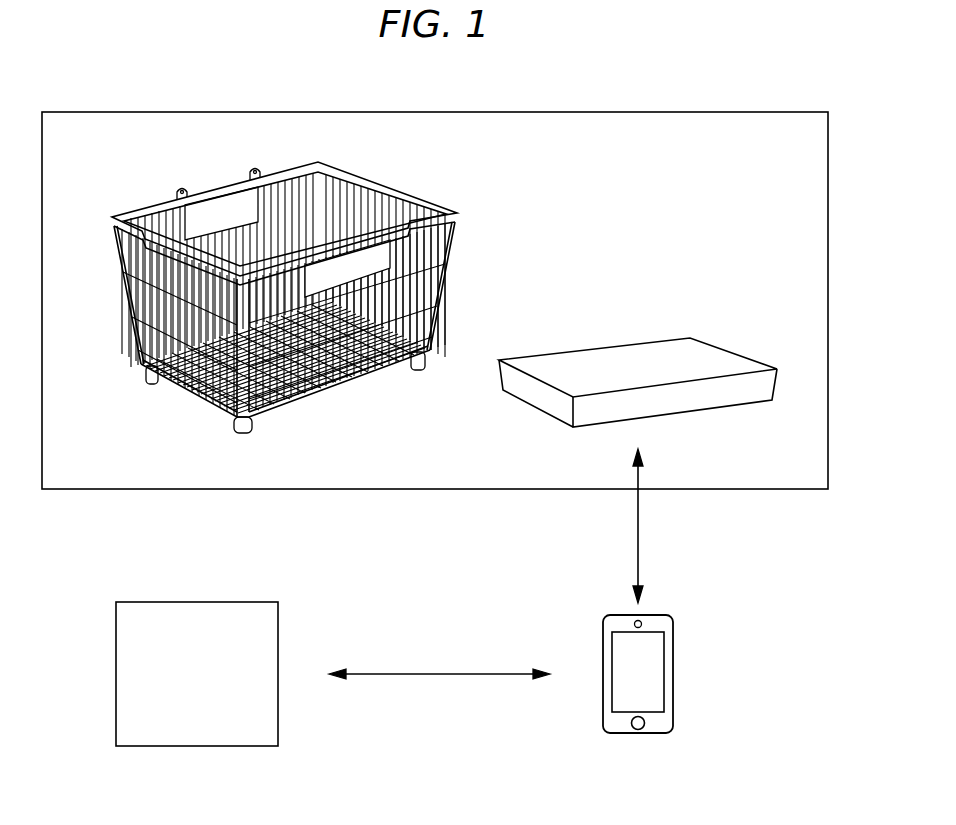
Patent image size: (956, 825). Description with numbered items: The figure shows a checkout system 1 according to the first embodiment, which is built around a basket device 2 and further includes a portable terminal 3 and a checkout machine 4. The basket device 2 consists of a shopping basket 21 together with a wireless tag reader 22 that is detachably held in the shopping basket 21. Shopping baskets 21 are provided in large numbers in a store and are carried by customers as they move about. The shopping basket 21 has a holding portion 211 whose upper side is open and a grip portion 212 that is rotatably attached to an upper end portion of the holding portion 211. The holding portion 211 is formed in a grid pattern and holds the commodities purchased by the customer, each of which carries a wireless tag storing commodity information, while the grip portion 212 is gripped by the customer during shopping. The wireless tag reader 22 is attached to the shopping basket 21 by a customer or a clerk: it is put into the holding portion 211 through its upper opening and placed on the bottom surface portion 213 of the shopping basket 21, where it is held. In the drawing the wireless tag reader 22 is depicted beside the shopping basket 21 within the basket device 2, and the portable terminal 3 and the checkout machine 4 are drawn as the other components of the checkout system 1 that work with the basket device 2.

The checkout system 1 is at (763, 706).
The basket device 2 is at (728, 110).
The shopping basket 21 is at (283, 298).
The holding portion 211 is at (118, 320).
The grip portion 212 is at (160, 200).
The bottom surface portion 213 is at (345, 384).
The wireless tag reader 22 is at (622, 345).
The portable terminal 3 is at (660, 615).
The checkout machine 4 is at (213, 587).